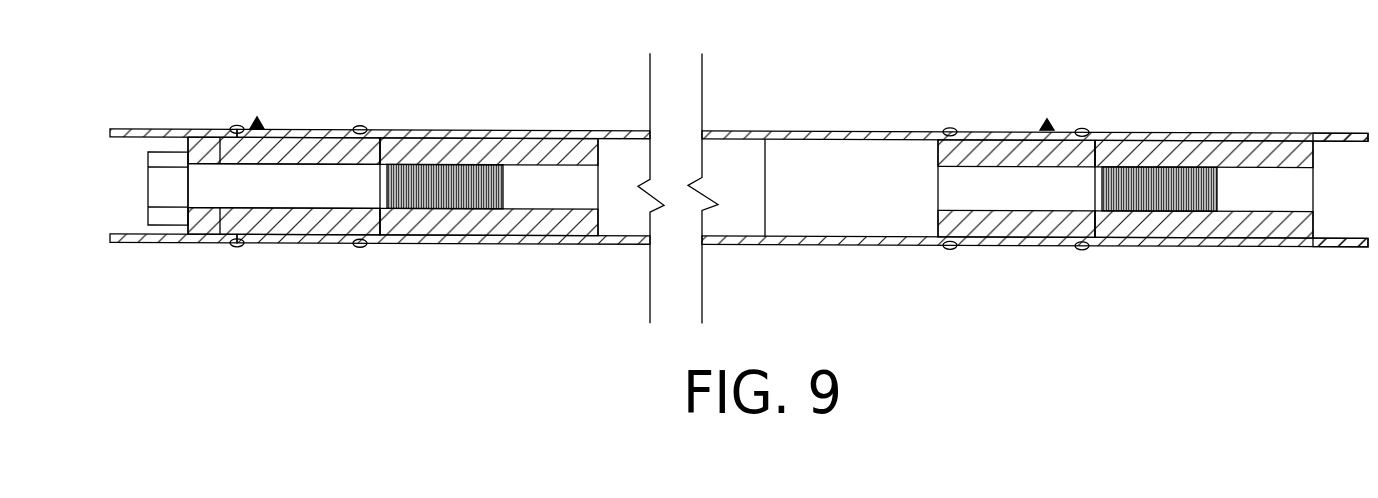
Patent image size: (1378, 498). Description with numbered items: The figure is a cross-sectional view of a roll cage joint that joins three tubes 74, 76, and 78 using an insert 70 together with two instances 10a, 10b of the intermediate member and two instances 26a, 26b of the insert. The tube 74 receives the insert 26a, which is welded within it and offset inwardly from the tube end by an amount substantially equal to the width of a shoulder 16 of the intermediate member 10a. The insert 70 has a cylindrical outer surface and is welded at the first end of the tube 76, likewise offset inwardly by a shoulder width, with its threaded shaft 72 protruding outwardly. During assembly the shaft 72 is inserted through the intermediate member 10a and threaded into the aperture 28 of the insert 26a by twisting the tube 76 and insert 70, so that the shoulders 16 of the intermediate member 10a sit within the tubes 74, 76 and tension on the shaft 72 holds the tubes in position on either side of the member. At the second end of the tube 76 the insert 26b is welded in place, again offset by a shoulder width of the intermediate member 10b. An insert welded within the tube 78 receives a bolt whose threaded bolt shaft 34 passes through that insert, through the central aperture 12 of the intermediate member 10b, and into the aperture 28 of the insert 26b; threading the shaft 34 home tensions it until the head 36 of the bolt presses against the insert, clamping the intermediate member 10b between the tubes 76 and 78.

The intermediate member 10a is at (1047, 124).
The intermediate member 10b is at (257, 121).
The central aperture 12 is at (303, 207).
The shoulder portions 16 is at (233, 152).
The insert 26a is at (1180, 146).
The insert 26b is at (467, 148).
The central aperture 28 is at (517, 205).
The bolt shaft 34 is at (353, 176).
The head 36 is at (173, 192).
The insert 70 is at (802, 174).
The shaft 72 is at (1040, 178).
The tube 74 is at (1290, 128).
The tube 76 is at (543, 128).
The tube 78 is at (147, 130).